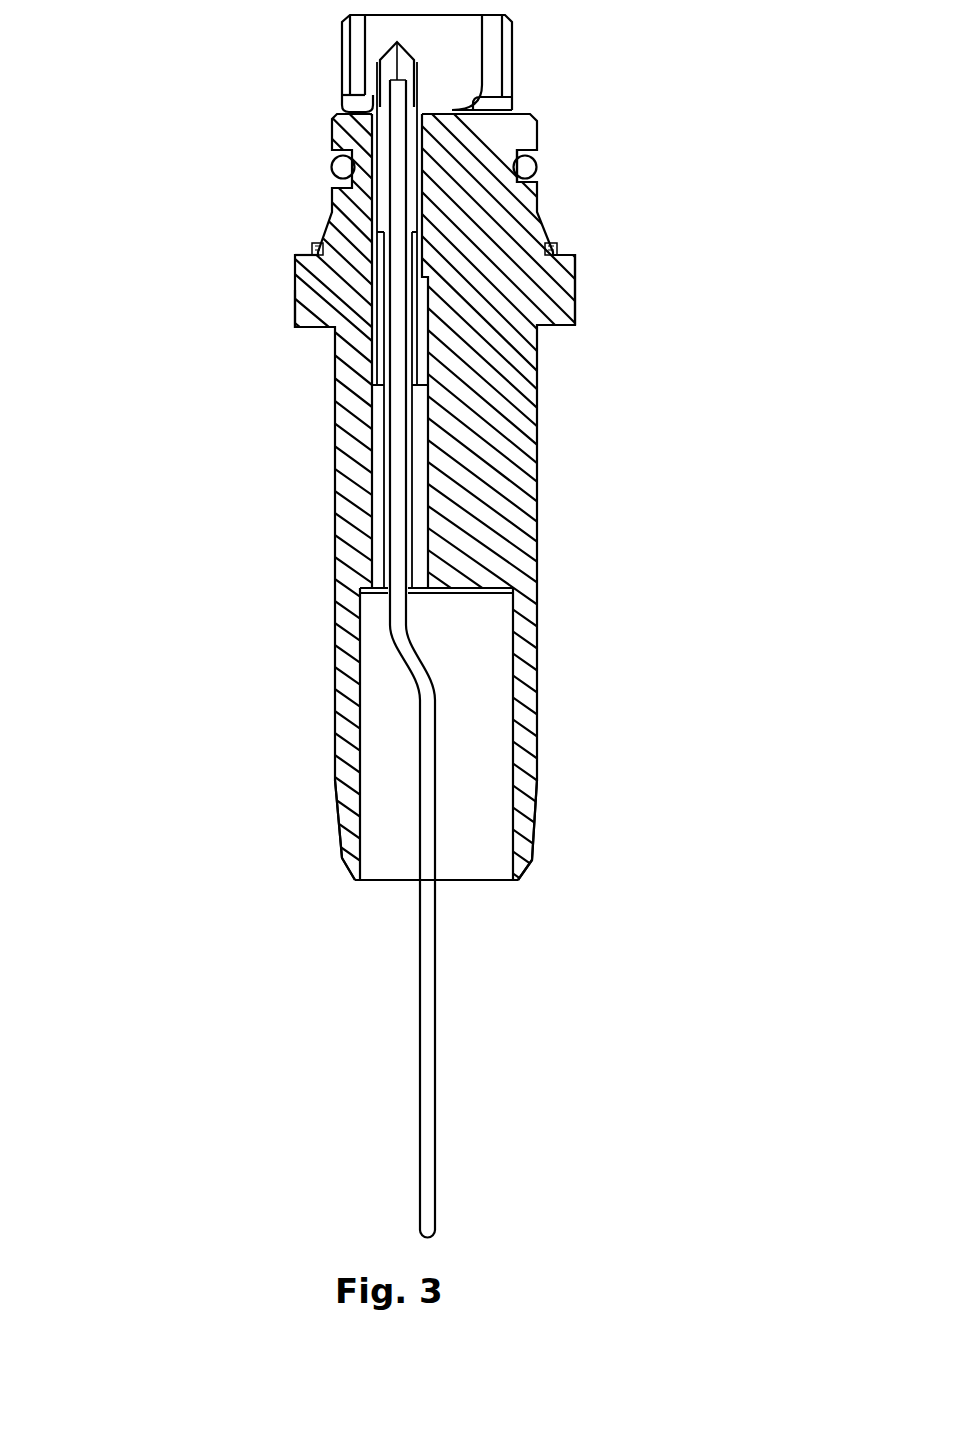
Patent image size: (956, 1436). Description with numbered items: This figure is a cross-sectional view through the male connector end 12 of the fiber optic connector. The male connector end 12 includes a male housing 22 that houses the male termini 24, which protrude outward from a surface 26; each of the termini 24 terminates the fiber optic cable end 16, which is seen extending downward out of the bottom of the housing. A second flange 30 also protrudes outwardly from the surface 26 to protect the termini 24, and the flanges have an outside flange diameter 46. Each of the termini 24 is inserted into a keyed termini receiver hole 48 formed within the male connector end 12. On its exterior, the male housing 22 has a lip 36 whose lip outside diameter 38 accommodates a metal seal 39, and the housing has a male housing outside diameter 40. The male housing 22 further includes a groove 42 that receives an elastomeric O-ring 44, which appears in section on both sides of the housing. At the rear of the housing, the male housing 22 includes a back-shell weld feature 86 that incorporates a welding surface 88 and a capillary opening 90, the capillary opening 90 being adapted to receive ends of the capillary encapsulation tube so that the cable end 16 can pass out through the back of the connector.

The male connector end 12 is at (236, 557).
The fiber optic cable end 16 is at (426, 945).
The male housing 22 is at (293, 193).
The male termini 24 is at (393, 64).
The surface 26 is at (478, 82).
The second flange 30 is at (430, 32).
The lip 36 is at (322, 277).
The lip outside diameter 38 is at (295, 309).
The metal seal 39 is at (574, 279).
The male housing outside diameter 40 is at (540, 211).
The groove 42 is at (536, 179).
The elastomeric O-ring 44 is at (526, 169).
The outside flange diameter 46 is at (512, 38).
The keyed termini receiver hole 48 is at (370, 109).
The back-shell weld feature 86 is at (280, 912).
The welding surface 88 is at (350, 868).
The capillary opening 90 is at (515, 830).